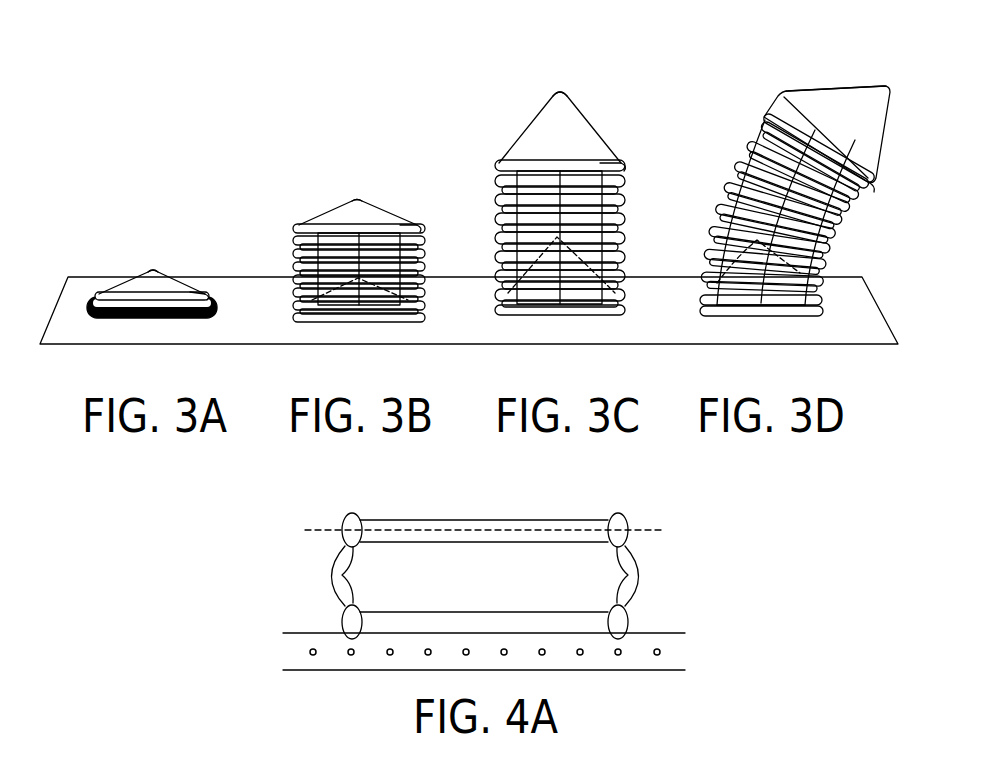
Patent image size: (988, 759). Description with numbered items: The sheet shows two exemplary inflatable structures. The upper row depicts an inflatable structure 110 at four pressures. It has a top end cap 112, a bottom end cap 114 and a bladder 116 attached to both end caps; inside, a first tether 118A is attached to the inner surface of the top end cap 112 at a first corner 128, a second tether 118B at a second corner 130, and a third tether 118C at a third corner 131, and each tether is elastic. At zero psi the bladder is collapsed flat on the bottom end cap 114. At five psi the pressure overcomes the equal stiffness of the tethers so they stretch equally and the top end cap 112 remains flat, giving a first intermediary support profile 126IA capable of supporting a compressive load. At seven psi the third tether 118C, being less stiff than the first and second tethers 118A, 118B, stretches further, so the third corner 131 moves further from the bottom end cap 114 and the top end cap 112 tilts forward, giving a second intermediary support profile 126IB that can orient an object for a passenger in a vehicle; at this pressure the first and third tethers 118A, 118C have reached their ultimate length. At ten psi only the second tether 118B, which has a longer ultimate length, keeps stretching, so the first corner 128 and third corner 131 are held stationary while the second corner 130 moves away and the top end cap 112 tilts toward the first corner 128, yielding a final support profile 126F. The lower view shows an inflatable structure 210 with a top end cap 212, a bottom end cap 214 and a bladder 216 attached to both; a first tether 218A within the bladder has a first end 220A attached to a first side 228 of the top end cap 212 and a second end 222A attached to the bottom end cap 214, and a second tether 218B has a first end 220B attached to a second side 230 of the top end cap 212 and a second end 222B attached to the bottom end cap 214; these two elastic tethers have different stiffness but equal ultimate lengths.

In FIG. 3A, the inflatable structure 110 is at (66, 360).
In FIG. 3A, the top end cap 112 is at (163, 287).
In FIG. 3B, the top end cap 112 is at (353, 213).
In FIG. 3C, the top end cap 112 is at (548, 123).
In FIG. 3D, the top end cap 112 is at (843, 102).
In FIG. 3A, the bottom end cap 114 is at (152, 318).
In FIG. 3B, the bottom end cap 114 is at (358, 322).
In FIG. 3C, the bottom end cap 114 is at (558, 315).
In FIG. 3D, the bottom end cap 114 is at (762, 316).
In FIG. 3B, the bladder 116 is at (360, 245).
In FIG. 3C, the bladder 116 is at (555, 202).
In FIG. 3D, the bladder 116 is at (768, 212).
In FIG. 3B, the first tether 118A is at (420, 250).
In FIG. 3C, the first tether 118A is at (620, 198).
In FIG. 3D, the first tether 118A is at (827, 278).
In FIG. 3B, the second tether 118B is at (305, 273).
In FIG. 3C, the second tether 118B is at (502, 183).
In FIG. 3D, the second tether 118B is at (708, 250).
In FIG. 3B, the third tether 118C is at (345, 247).
In FIG. 3C, the third tether 118C is at (560, 176).
In FIG. 3D, the third tether 118C is at (757, 144).
In FIG. 3B, the first intermediary support profile 126IA is at (362, 182).
In FIG. 3C, the second intermediary support profile 126IB is at (568, 80).
In FIG. 3D, the final support profile 126F is at (853, 68).
In FIG. 3A, the first corner 128 is at (201, 293).
In FIG. 3B, the first corner 128 is at (405, 225).
In FIG. 3C, the first corner 128 is at (605, 158).
In FIG. 3D, the first corner 128 is at (872, 168).
In FIG. 3A, the second corner 130 is at (108, 297).
In FIG. 3B, the second corner 130 is at (317, 226).
In FIG. 3C, the second corner 130 is at (513, 158).
In FIG. 3D, the second corner 130 is at (803, 100).
In FIG. 3A, the third corner 131 is at (150, 276).
In FIG. 3B, the third corner 131 is at (360, 203).
In FIG. 3C, the third corner 131 is at (563, 103).
In FIG. 3D, the third corner 131 is at (873, 93).
In FIG. 4A, the inflatable structure 210 is at (292, 688).
In FIG. 4A, the top end cap 212 is at (447, 525).
In FIG. 4A, the bottom end cap 214 is at (548, 625).
In FIG. 4A, the bladder 216 is at (296, 584).
In FIG. 4A, the first tether 218A is at (340, 580).
In FIG. 4A, the second tether 218B is at (617, 568).
In FIG. 4A, the first end of first tether 220A is at (353, 550).
In FIG. 4A, the first end of second tether 220B is at (618, 550).
In FIG. 4A, the second end of first tether 222A is at (338, 607).
In FIG. 4A, the second end of second tether 222B is at (632, 605).
In FIG. 4A, the first side 228 is at (368, 527).
In FIG. 4A, the second side 230 is at (610, 528).